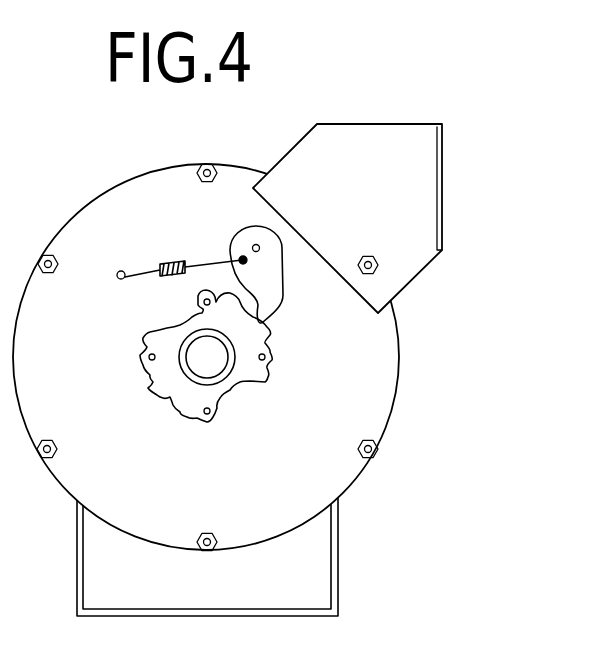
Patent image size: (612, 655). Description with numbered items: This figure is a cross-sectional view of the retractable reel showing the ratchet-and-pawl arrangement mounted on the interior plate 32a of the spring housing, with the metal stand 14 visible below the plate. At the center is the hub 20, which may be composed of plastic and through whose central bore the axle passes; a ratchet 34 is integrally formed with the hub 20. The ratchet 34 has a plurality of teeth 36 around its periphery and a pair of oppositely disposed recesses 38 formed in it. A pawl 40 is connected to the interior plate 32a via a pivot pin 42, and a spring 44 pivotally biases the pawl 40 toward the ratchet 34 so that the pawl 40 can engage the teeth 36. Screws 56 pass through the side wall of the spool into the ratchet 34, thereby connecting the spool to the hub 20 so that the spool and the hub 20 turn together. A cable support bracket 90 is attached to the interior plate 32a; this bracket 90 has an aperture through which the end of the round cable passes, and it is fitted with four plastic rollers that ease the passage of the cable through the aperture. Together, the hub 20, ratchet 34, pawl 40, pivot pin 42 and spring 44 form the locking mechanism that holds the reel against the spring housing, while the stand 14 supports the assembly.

The metal stand 14 is at (305, 590).
The hub 20 is at (200, 370).
The interior plate 32a is at (97, 223).
The ratchet 34 is at (175, 392).
The teeth 36 is at (152, 390).
The recesses 38 is at (180, 332).
The pawl 40 is at (270, 303).
The pivot pin 42 is at (254, 245).
The spring 44 is at (168, 262).
The screws 56 is at (198, 306).
The cable support bracket 90 is at (423, 242).